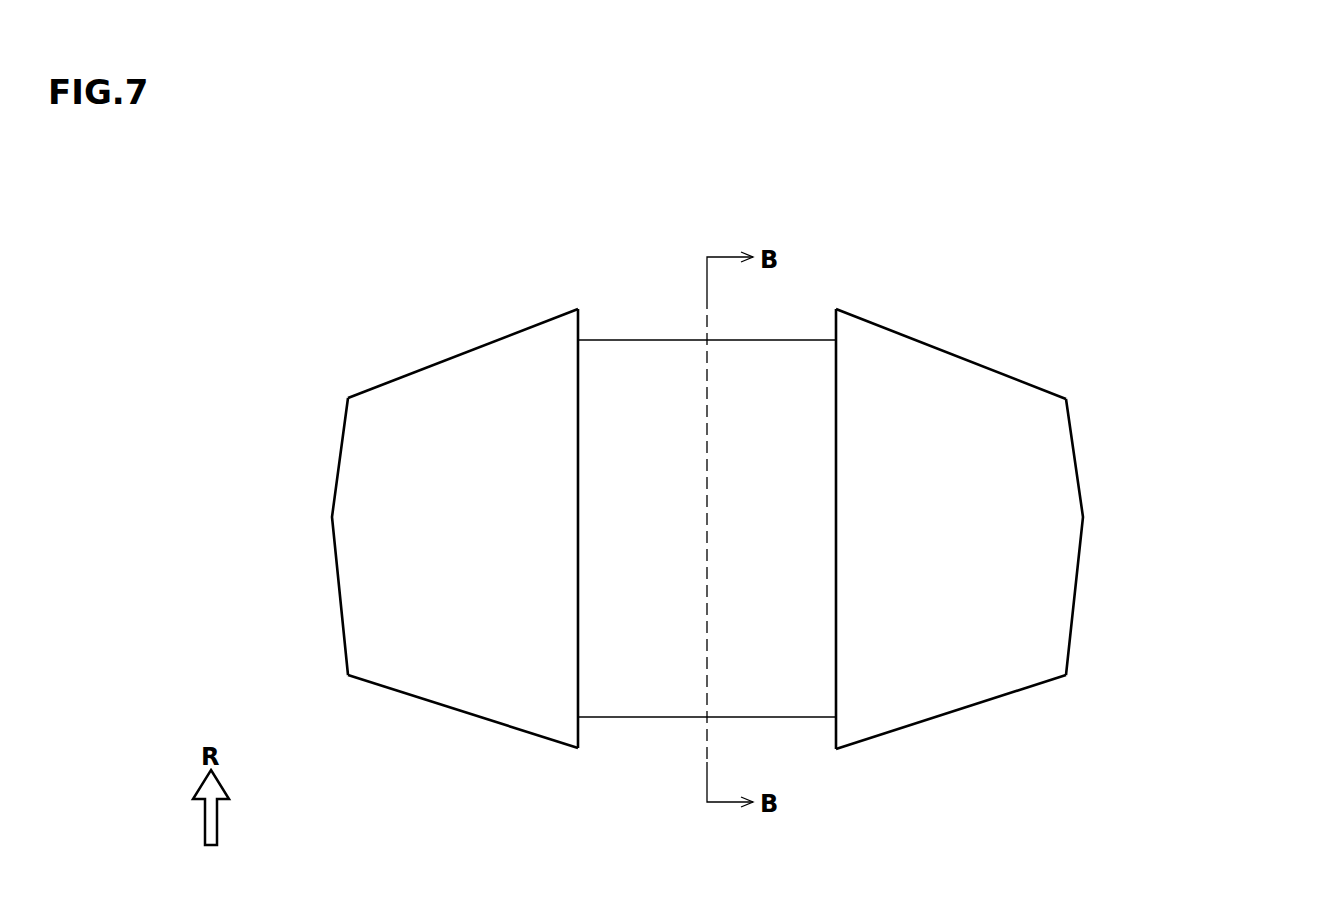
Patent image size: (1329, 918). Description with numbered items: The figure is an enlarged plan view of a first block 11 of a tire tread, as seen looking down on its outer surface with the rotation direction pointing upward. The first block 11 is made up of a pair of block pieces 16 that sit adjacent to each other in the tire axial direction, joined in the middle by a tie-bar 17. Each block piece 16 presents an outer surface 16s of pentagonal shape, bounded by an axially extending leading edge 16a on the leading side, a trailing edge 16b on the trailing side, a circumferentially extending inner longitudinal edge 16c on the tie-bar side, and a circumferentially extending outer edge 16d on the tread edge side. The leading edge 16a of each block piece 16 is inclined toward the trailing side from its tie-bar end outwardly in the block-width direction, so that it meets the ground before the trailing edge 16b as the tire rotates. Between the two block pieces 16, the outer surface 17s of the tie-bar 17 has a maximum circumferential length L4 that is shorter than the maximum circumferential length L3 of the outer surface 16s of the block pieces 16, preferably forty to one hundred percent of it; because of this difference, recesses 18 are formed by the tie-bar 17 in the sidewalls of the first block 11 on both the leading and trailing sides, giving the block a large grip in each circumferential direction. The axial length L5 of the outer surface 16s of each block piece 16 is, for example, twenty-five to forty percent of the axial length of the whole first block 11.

The first block 11 is at (918, 237).
The block piece 16 is at (413, 645).
The leading edge 16a is at (403, 377).
The trailing edge 16b is at (440, 707).
The inner longitudinal edge 16c is at (583, 643).
The outer edge 16d is at (333, 543).
The outer surface of block piece 16s is at (412, 592).
The tie-bar 17 is at (633, 383).
The outer surface of tie-bar 17s is at (780, 383).
The recess 18 is at (666, 340).
The maximum circumferential length of block piece outer surface L3 is at (836, 309).
The maximum circumferential length of tie-bar outer surface L4 is at (836, 340).
The axial length of block piece outer surface L5 is at (333, 517).